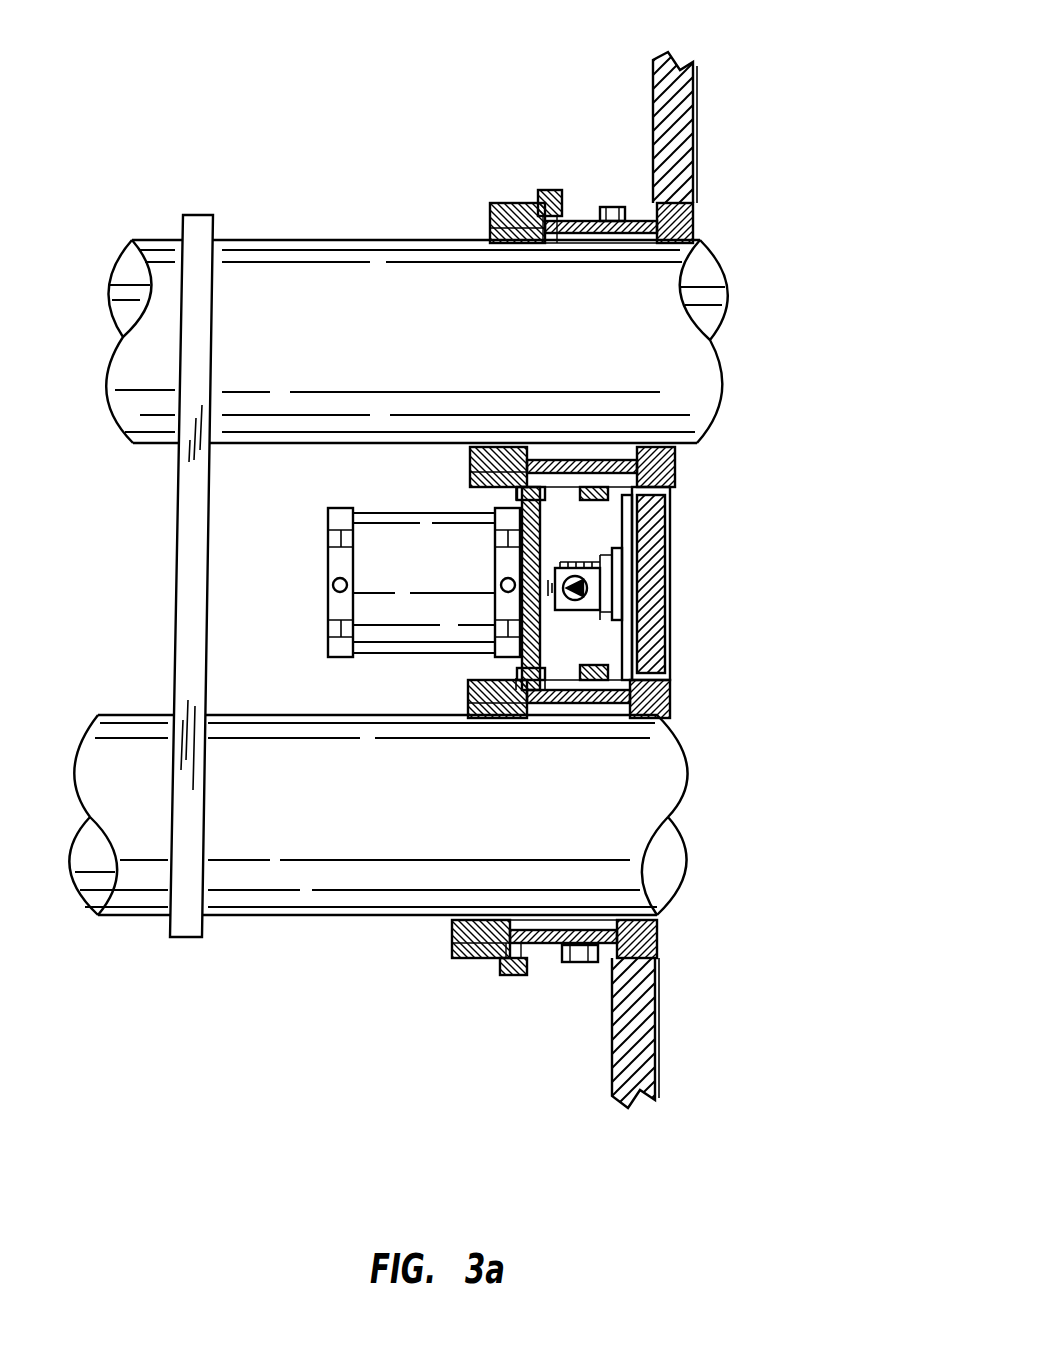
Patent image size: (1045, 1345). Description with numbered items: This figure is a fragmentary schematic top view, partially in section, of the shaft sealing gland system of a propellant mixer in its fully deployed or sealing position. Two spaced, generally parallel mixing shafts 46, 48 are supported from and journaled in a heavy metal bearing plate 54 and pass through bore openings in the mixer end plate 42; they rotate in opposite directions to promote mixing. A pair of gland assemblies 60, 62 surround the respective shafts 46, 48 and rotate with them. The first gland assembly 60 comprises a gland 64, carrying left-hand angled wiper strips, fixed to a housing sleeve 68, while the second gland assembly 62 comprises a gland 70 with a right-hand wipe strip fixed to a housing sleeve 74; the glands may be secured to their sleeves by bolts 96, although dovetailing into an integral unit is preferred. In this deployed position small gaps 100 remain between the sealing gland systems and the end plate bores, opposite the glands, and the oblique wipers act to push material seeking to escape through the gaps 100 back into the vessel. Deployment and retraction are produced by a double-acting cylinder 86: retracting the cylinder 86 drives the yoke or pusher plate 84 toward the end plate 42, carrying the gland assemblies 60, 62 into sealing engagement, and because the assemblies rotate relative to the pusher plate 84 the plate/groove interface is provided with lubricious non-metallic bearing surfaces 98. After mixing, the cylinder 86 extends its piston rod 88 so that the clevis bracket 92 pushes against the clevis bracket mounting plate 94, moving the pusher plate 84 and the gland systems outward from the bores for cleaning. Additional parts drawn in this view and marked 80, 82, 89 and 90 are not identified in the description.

The mixer end plate 42 is at (700, 82).
The mixing shaft 46 is at (285, 337).
The mixing shaft 48 is at (248, 810).
The bearing plate 54 is at (190, 533).
The gland assembly 60 is at (474, 180).
The gland assembly 62 is at (470, 978).
The gland 64 is at (695, 222).
The housing sleeve 68 is at (513, 203).
The gland 70 is at (676, 704).
The housing sleeve 74 is at (468, 686).
The intermediate flange block 80 is at (513, 243).
The lower intermediate flange 82 is at (487, 718).
The pusher plate 84 is at (546, 525).
The double-acting cylinder 86 is at (377, 583).
The piston rod 88 is at (520, 567).
The actuator lower rod 89 is at (525, 610).
The pivot block 90 is at (600, 587).
The clevis bracket 92 is at (625, 575).
The clevis bracket mounting plate 94 is at (636, 547).
The bolts 96 is at (607, 203).
The bearing surfaces 98 is at (557, 236).
The gaps 100 is at (698, 214).